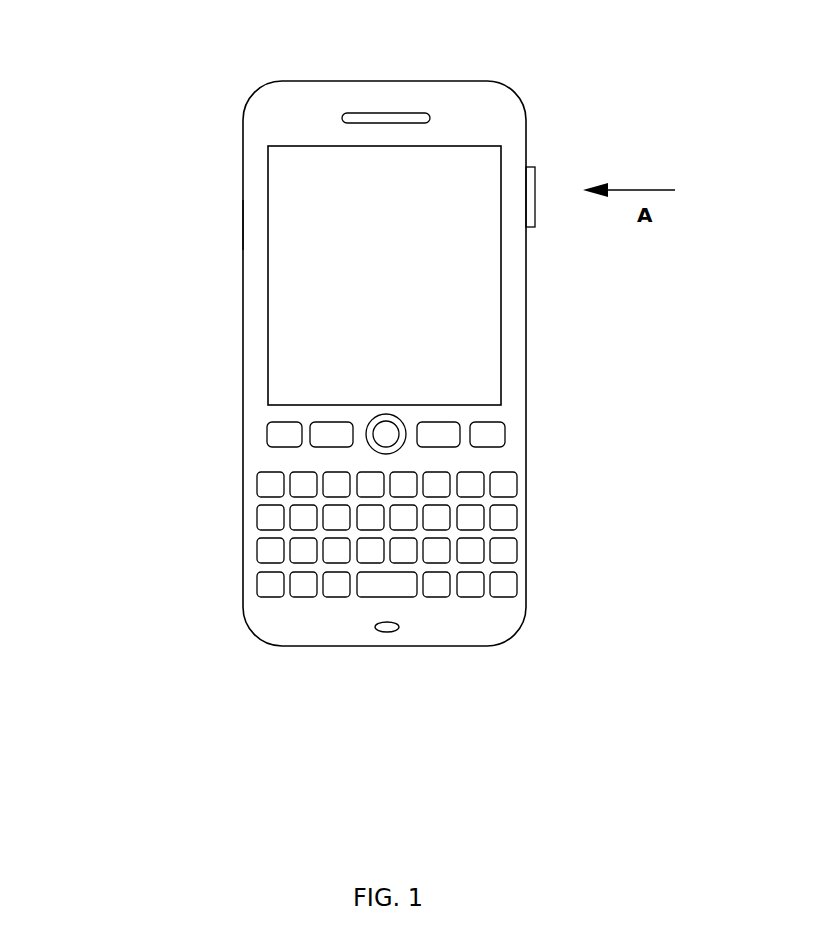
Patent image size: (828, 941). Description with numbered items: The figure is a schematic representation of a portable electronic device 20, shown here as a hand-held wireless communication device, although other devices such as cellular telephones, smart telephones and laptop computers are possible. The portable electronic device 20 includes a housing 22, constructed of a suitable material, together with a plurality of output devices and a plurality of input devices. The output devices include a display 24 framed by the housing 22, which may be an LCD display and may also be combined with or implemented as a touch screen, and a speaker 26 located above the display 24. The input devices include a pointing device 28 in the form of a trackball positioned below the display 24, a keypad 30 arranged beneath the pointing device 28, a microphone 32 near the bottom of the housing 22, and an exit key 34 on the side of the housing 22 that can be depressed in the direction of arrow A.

The portable electronic device 20 is at (232, 130).
The housing 22 is at (243, 222).
The display 24 is at (268, 275).
The speaker 26 is at (430, 117).
The pointing device 28 is at (387, 413).
The keypad 30 is at (258, 534).
The microphone 32 is at (399, 627).
The exit key 34 is at (535, 196).